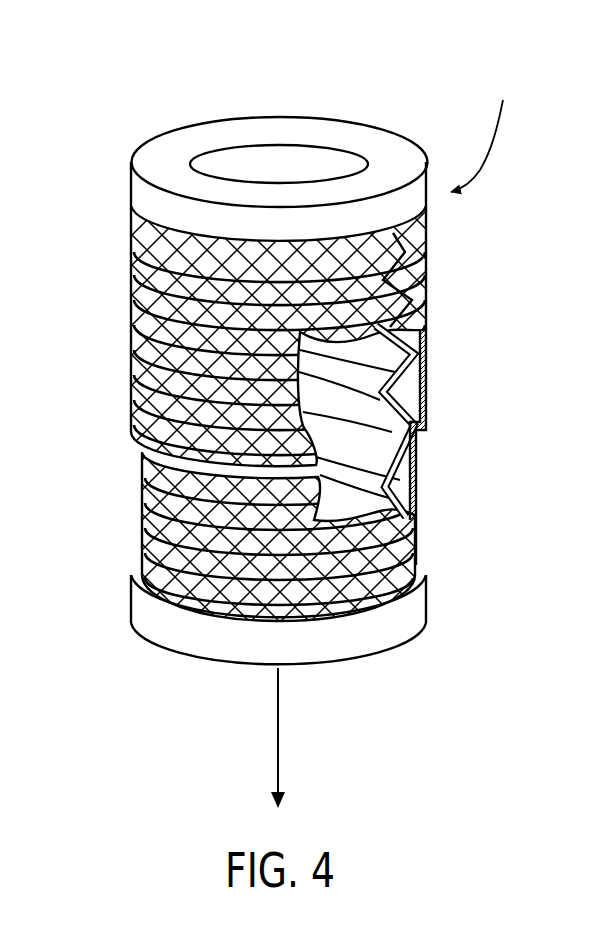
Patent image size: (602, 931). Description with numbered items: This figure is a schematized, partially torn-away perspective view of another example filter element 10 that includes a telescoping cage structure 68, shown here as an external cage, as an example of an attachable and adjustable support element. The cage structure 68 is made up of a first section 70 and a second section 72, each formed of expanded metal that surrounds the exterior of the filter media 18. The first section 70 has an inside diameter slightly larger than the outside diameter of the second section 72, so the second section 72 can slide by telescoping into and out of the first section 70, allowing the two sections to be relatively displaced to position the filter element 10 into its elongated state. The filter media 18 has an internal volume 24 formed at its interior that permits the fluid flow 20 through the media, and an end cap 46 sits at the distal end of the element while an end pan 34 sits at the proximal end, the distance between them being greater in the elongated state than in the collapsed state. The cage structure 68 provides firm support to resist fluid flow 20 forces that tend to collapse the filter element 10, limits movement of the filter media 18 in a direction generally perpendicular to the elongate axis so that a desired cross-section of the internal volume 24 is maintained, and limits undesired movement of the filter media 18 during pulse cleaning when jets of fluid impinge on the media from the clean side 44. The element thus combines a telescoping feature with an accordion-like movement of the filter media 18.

The filter element 10 is at (403, 88).
The filter media 18 is at (428, 380).
The fluid flow 20 is at (497, 150).
The internal volume 24 is at (260, 167).
The end pan 34 is at (400, 645).
The clean side 44 is at (373, 416).
The end cap 46 is at (158, 136).
The telescoping cage structure 68 is at (445, 283).
The first section 70 is at (131, 311).
The second section 72 is at (142, 536).